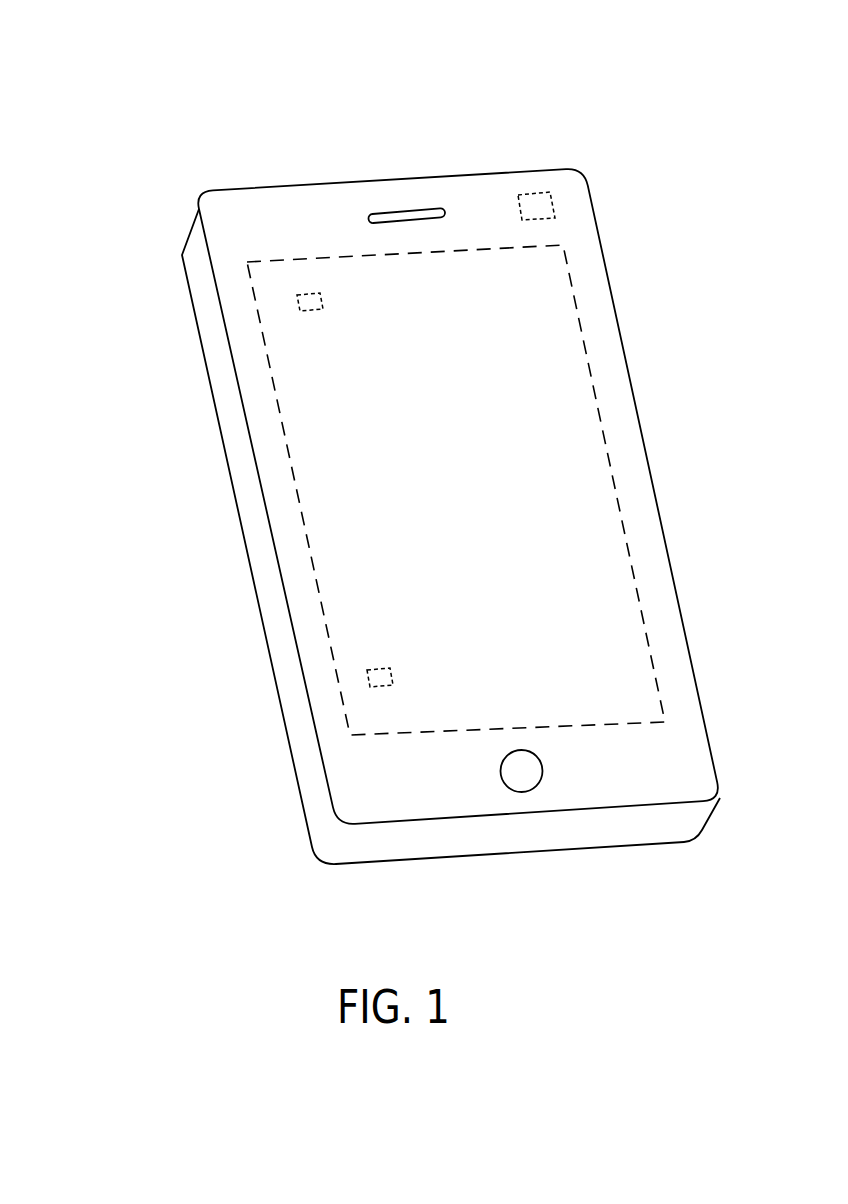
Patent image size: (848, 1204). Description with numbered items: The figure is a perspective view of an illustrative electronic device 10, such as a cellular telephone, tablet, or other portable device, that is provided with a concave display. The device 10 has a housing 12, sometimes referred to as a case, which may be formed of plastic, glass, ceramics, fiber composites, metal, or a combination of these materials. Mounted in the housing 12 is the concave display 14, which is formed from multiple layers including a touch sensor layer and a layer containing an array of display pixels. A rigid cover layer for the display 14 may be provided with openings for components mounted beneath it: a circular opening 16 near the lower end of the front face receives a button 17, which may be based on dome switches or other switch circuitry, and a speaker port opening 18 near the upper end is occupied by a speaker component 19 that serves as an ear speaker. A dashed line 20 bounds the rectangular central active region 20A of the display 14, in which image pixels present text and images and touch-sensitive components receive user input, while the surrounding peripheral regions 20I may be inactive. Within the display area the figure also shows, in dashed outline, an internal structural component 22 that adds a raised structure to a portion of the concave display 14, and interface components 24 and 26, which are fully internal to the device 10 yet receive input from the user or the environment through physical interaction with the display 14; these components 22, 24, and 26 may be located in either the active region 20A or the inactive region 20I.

The electronic device 10 is at (131, 108).
The housing 12 is at (188, 280).
The concave display 14 is at (607, 597).
The circular opening 16 is at (542, 768).
The button 17 is at (520, 780).
The speaker port opening 18 is at (432, 210).
The speaker component 19 is at (397, 215).
The dashed line 20 is at (587, 357).
The active display region 20A is at (325, 538).
The inactive peripheral regions 20I is at (317, 212).
The structural component 22 is at (368, 678).
The interface component 24 is at (300, 302).
The interface component 26 is at (540, 207).